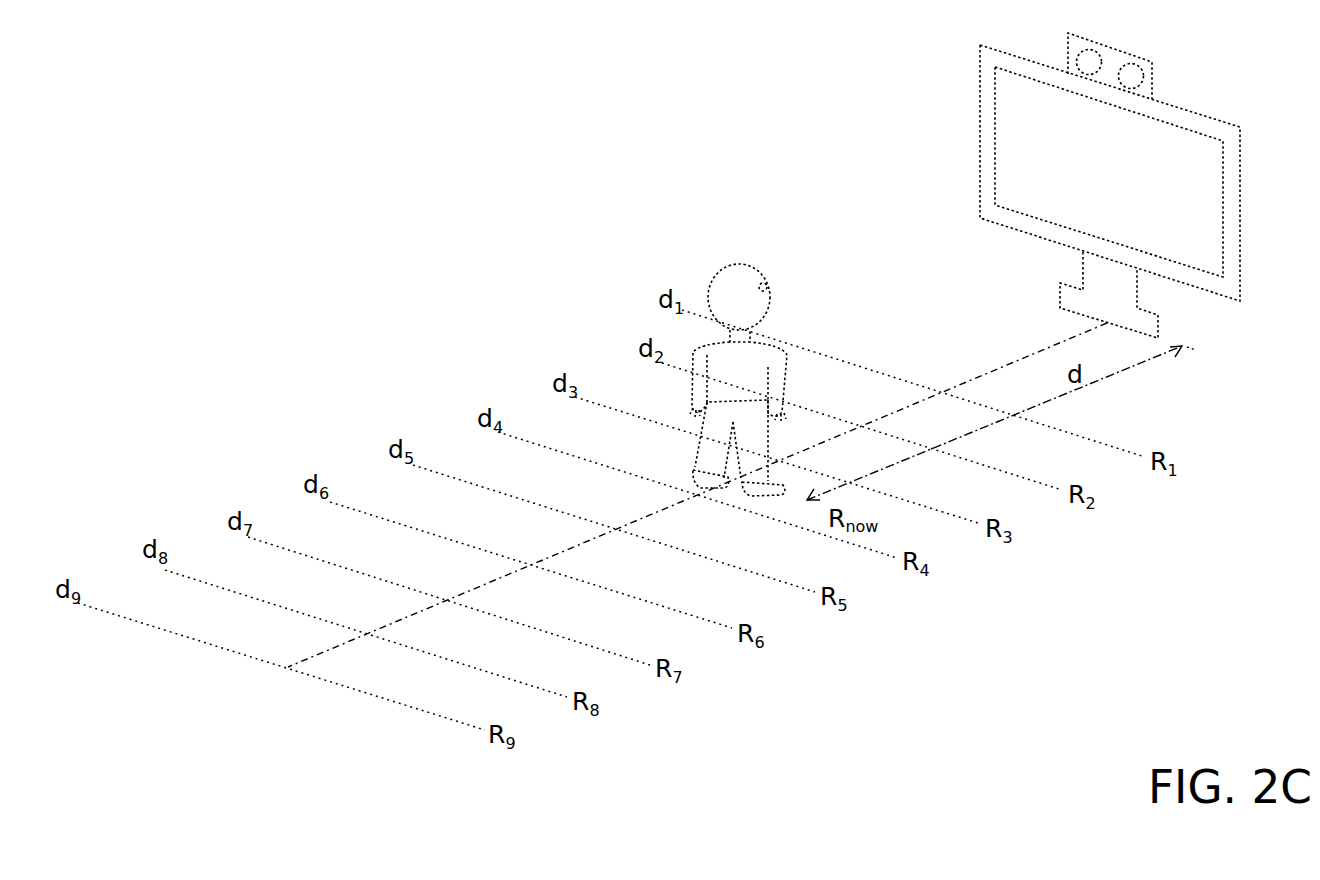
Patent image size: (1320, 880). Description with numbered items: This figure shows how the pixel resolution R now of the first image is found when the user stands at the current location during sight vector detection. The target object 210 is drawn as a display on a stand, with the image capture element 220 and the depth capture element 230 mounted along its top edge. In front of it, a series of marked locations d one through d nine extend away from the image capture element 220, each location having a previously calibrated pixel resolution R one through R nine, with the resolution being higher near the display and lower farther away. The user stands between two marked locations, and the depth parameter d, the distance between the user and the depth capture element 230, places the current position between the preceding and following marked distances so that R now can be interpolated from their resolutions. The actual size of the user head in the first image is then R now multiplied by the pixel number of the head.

The target object 210 is at (1242, 211).
The image capture element 220 is at (1068, 60).
The depth capture element 230 is at (1135, 72).